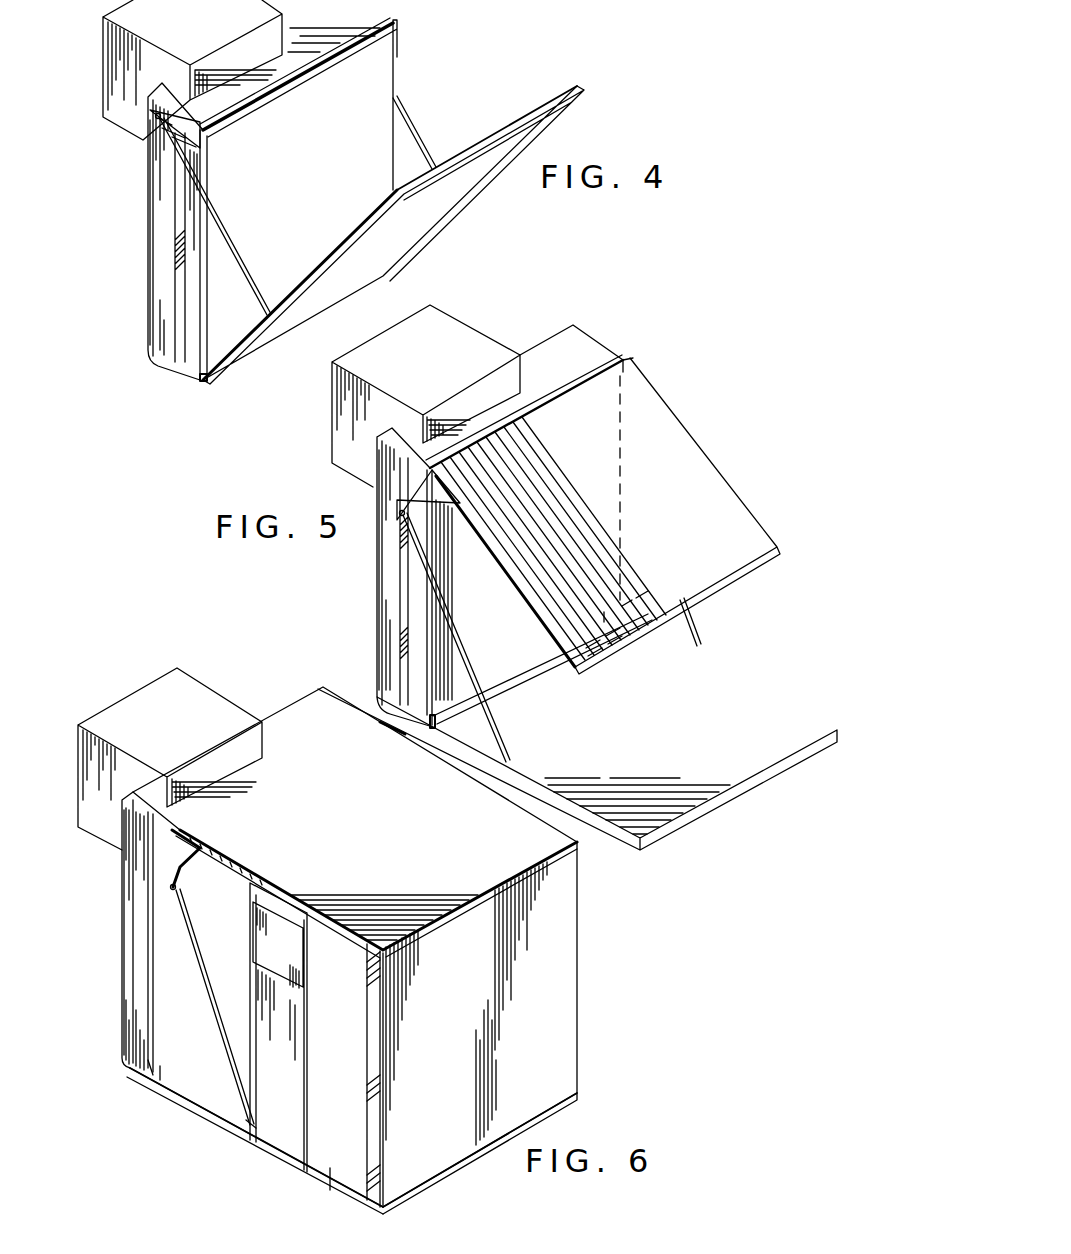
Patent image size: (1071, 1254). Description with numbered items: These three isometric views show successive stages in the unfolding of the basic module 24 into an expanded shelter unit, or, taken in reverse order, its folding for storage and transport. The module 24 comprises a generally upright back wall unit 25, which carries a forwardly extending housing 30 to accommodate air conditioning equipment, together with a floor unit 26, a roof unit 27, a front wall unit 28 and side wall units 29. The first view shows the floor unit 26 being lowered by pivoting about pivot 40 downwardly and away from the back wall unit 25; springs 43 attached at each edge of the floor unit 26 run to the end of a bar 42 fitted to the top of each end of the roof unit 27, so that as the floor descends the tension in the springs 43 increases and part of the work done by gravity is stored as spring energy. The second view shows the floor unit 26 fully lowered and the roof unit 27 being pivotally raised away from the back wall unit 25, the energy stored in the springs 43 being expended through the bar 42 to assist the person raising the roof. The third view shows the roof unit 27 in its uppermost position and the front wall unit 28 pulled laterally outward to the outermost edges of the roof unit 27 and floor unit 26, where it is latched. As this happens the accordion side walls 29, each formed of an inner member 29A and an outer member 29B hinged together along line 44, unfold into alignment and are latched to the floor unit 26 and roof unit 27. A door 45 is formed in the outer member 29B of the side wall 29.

In FIG. 4, the basic module 24 is at (148, 215).
In FIG. 5, the basic module 24 is at (377, 660).
In FIG. 6, the basic module 24 is at (121, 953).
In FIG. 4, the back wall unit 25 is at (160, 274).
In FIG. 5, the back wall unit 25 is at (385, 578).
In FIG. 6, the back wall unit 25 is at (130, 886).
In FIG. 4, the floor unit 26 is at (278, 336).
In FIG. 5, the floor unit 26 is at (748, 766).
In FIG. 6, the floor unit 26 is at (550, 1100).
In FIG. 4, the roof unit 27 is at (367, 87).
In FIG. 5, the roof unit 27 is at (670, 437).
In FIG. 6, the roof unit 27 is at (525, 838).
In FIG. 5, the front wall unit 28 is at (440, 625).
In FIG. 6, the front wall unit 28 is at (553, 922).
In FIG. 4, the side wall unit 29 is at (185, 340).
In FIG. 5, the side wall unit 29 is at (406, 595).
In FIG. 6, the side wall unit 29 is at (200, 1083).
In FIG. 6, the inner member 29A is at (180, 1043).
In FIG. 6, the outer member 29B is at (320, 1170).
In FIG. 4, the housing 30 is at (103, 40).
In FIG. 5, the housing 30 is at (345, 430).
In FIG. 6, the housing 30 is at (97, 798).
In FIG. 4, the pivot 40 is at (202, 382).
In FIG. 5, the pivot 40 is at (436, 717).
In FIG. 4, the bar 42 is at (187, 133).
In FIG. 5, the bar 42 is at (400, 514).
In FIG. 6, the bar 42 is at (182, 852).
In FIG. 4, the spring 43 is at (230, 245).
In FIG. 5, the spring 43 is at (497, 730).
In FIG. 6, the spring 43 is at (197, 958).
In FIG. 6, the hinge line 44 is at (250, 883).
In FIG. 6, the door 45 is at (283, 1090).